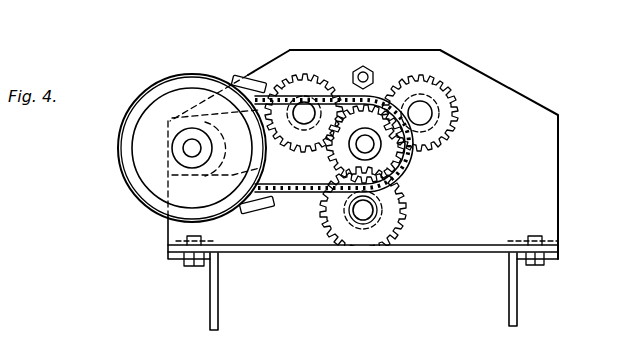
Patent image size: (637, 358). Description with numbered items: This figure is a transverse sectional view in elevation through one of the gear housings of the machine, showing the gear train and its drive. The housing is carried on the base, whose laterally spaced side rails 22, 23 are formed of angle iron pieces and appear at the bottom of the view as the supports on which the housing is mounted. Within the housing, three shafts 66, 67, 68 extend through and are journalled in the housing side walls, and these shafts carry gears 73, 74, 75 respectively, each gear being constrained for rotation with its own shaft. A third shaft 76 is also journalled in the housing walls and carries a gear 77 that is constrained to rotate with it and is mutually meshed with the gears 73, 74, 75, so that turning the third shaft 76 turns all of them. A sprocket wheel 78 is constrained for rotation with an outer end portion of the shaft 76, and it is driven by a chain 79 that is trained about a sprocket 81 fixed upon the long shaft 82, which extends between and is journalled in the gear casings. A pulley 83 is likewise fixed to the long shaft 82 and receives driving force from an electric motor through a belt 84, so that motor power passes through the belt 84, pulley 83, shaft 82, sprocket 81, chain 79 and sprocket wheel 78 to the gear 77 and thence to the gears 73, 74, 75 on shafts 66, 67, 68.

The side rail 22 is at (212, 316).
The side rail 23 is at (518, 298).
The shaft 66 is at (428, 108).
The shaft 67 is at (303, 122).
The shaft 68 is at (380, 211).
The gear 73 is at (462, 126).
The gear 74 is at (316, 76).
The gear 75 is at (382, 252).
The third shaft 76 is at (372, 150).
The gear 77 is at (408, 165).
The sprocket wheel 78 is at (332, 165).
The chain 79 is at (290, 195).
The sprocket 81 is at (219, 170).
The long shaft 82 is at (190, 150).
The pulley 83 is at (153, 200).
The belt 84 is at (248, 213).